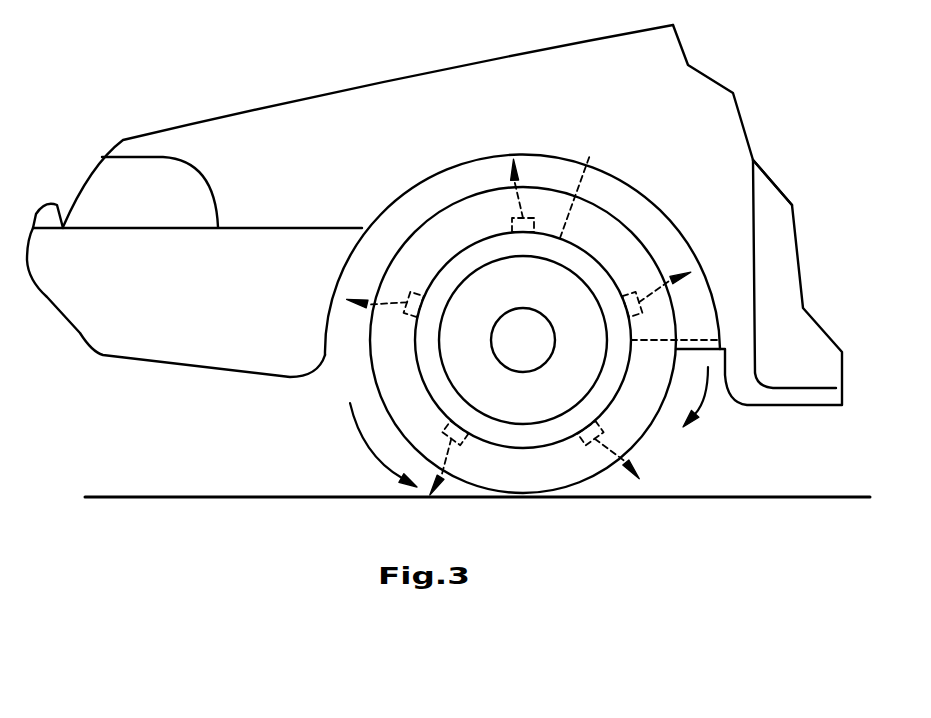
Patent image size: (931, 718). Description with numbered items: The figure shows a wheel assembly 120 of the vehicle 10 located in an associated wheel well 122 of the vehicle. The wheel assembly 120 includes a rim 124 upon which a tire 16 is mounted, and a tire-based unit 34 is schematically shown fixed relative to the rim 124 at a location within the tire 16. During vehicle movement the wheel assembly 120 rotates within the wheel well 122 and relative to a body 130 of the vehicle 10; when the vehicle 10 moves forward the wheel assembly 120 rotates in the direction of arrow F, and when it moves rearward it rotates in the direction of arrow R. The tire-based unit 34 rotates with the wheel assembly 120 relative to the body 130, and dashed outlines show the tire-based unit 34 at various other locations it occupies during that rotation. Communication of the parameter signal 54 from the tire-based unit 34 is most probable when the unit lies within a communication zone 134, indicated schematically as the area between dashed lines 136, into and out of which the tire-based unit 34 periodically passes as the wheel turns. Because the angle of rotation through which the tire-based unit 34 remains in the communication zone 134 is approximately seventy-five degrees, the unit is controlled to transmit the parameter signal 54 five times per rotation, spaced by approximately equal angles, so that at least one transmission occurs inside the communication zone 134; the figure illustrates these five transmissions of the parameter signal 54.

The vehicle 10 is at (245, 103).
The tire 16 is at (458, 227).
The tire-based unit 34 is at (447, 430).
The parameter signal 54 is at (513, 178).
The wheel assembly 120 is at (666, 449).
The wheel well 122 is at (322, 322).
The rim 124 is at (450, 273).
The body 130 is at (702, 97).
The communication zone 134 is at (652, 212).
The dashed lines 136 is at (583, 172).
The arrow F is at (363, 443).
The arrow R is at (702, 393).